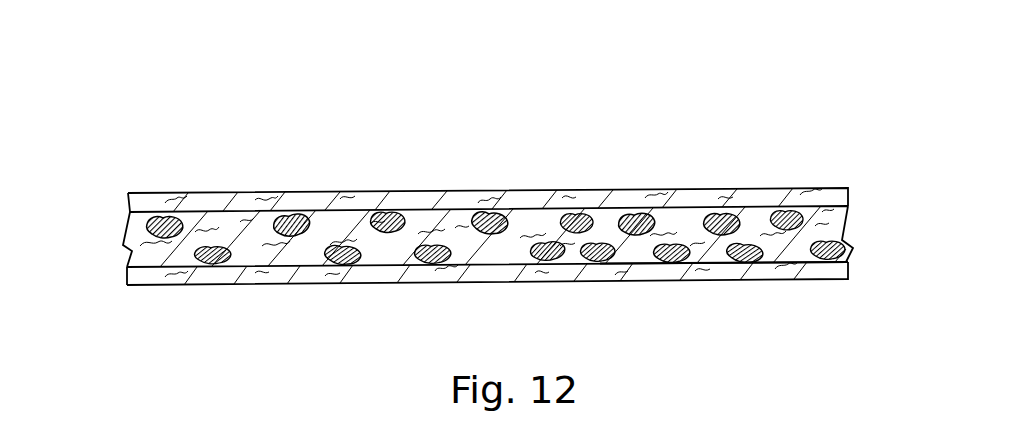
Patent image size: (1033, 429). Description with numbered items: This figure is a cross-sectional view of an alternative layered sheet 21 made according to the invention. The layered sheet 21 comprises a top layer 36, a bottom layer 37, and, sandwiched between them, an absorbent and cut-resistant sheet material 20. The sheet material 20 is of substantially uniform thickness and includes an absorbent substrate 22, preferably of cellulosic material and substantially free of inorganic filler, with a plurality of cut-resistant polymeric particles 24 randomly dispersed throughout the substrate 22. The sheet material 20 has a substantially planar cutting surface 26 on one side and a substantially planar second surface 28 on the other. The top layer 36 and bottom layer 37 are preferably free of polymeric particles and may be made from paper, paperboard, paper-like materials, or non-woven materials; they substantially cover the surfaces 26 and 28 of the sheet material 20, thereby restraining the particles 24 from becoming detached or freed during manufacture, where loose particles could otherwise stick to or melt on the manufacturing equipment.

The sheet material 20 is at (125, 218).
The layered sheet 21 is at (650, 157).
The absorbent substrate 22 is at (830, 226).
The cut-resistant particles 24 is at (715, 215).
The cutting surface 26 is at (538, 197).
The second surface 28 is at (722, 262).
The top layer 36 is at (466, 200).
The bottom layer 37 is at (448, 273).